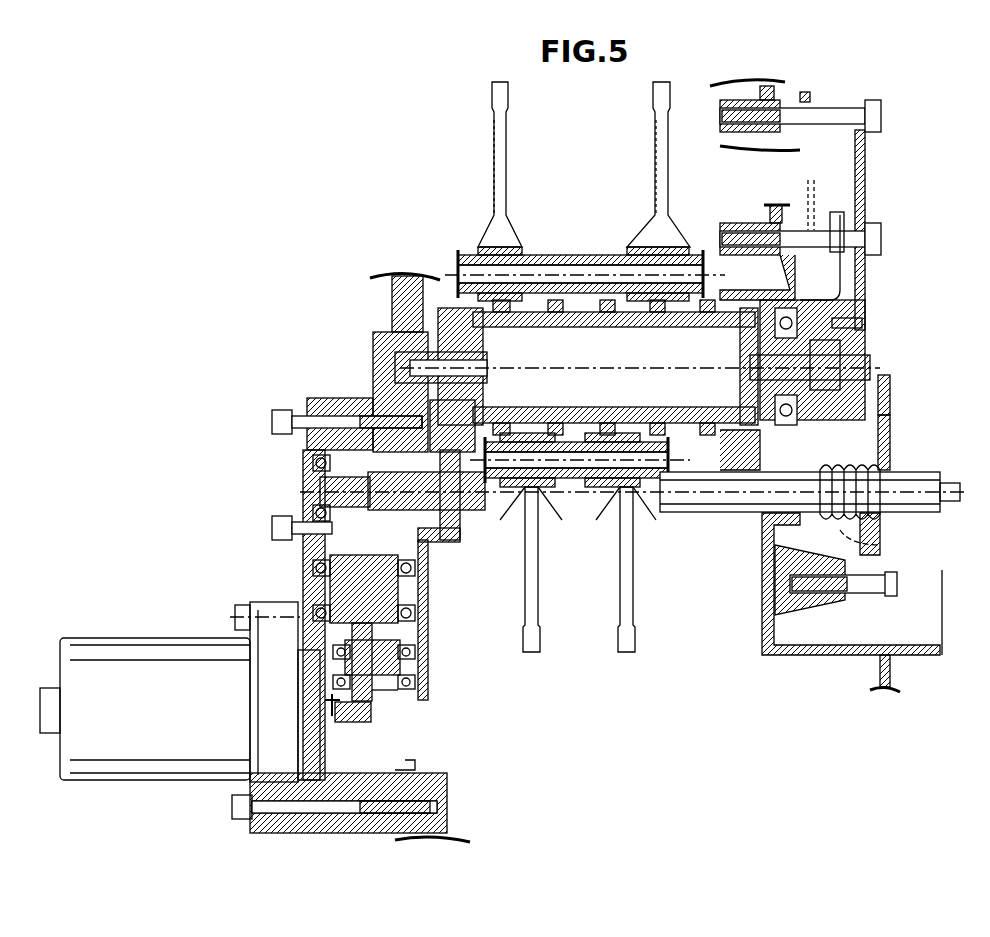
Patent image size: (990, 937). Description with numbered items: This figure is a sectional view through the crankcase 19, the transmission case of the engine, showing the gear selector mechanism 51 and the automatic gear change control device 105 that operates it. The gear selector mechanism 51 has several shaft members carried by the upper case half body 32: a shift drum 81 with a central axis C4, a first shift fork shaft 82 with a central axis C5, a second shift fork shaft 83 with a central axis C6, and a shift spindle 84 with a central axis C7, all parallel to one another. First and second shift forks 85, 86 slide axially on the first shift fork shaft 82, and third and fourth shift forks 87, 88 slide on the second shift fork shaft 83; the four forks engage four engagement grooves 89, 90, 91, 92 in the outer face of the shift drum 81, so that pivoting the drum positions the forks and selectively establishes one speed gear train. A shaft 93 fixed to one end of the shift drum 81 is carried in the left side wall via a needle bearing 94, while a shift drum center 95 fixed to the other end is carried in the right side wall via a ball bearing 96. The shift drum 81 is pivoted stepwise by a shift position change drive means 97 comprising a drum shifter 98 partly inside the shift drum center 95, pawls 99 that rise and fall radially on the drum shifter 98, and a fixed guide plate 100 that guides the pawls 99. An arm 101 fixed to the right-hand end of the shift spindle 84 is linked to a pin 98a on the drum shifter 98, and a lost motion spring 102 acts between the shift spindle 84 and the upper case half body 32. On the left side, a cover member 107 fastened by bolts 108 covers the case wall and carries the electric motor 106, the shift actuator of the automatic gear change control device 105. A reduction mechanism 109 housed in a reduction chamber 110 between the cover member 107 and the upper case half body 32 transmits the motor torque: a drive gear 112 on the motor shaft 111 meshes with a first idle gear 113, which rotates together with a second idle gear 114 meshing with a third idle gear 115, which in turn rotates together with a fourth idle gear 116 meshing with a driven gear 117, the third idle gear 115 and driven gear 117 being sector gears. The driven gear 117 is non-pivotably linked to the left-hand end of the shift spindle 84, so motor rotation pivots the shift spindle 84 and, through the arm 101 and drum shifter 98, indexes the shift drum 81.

The crankcase 19 is at (390, 300).
The needle bearing 94 is at (392, 321).
The upper case half body 32 is at (372, 352).
The cover member 107 is at (310, 460).
The bolts 108 is at (272, 422).
The shift drum 81 is at (580, 320).
The shaft 93 is at (488, 376).
The central axis of the shift drum C4 is at (620, 368).
The shift drum center 95 is at (758, 372).
The second shift fork shaft 83 is at (605, 255).
The central axis of the second shift fork shaft C6 is at (588, 252).
The engagement groove 91 is at (472, 252).
The engagement groove 92 is at (680, 252).
The third shift fork 87 is at (506, 172).
The fourth shift fork 88 is at (655, 172).
The first shift fork shaft 82 is at (575, 488).
The central axis of the first shift fork shaft C5 is at (592, 440).
The engagement groove 89 is at (525, 488).
The engagement groove 90 is at (608, 488).
The first shift fork 85 is at (528, 622).
The second shift fork 86 is at (635, 610).
The gear selector mechanism 51 is at (645, 528).
The central axis of the shift spindle C7 is at (704, 490).
The shift spindle 84 is at (320, 492).
The lost motion spring 102 is at (880, 520).
The shift position change drive means 97 is at (885, 332).
The fixed guide plate 100 is at (845, 250).
The ball bearing 96 is at (843, 293).
The pawls 99 is at (866, 314).
The drum shifter 98 is at (870, 348).
The pin 98a is at (892, 390).
The arm 101 is at (892, 440).
The automatic gear change control device 105 is at (165, 636).
The electric motor 106 is at (169, 692).
The fourth idle gear 116 is at (300, 625).
The reduction chamber 110 is at (320, 515).
The driven gear 117 is at (398, 588).
The third idle gear 115 is at (398, 665).
The second idle gear 114 is at (380, 690).
The reduction mechanism 109 is at (375, 700).
The first idle gear 113 is at (305, 648).
The motor shaft 111 is at (325, 712).
The drive gear 112 is at (350, 722).